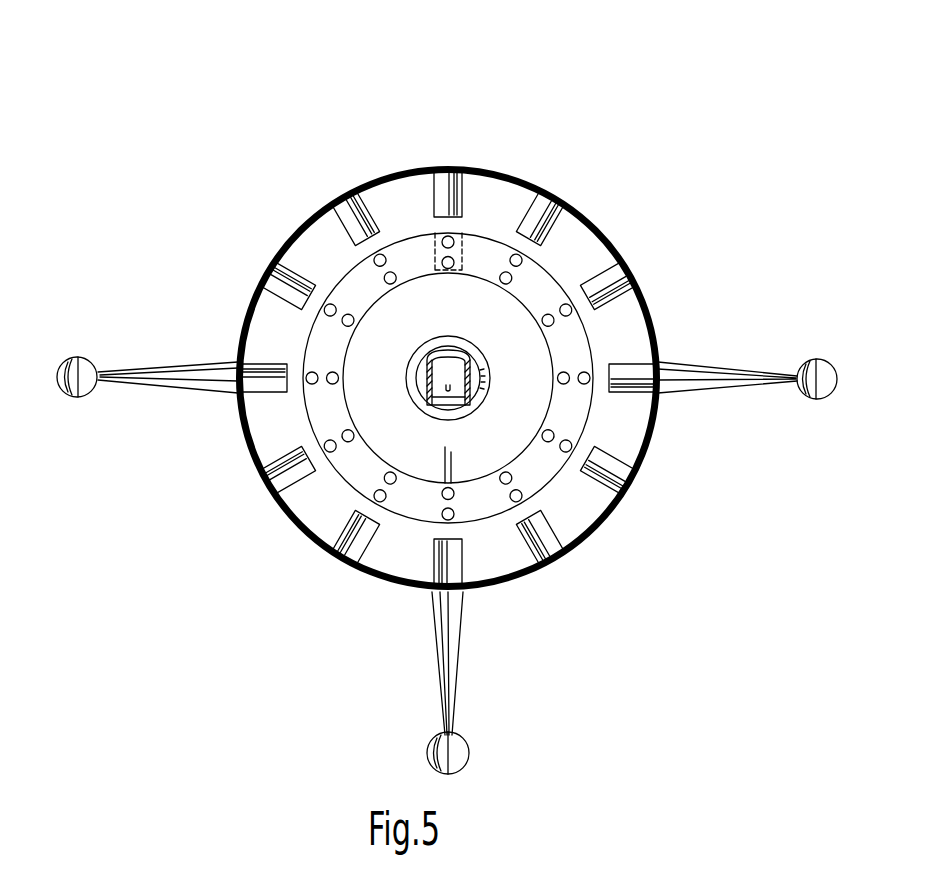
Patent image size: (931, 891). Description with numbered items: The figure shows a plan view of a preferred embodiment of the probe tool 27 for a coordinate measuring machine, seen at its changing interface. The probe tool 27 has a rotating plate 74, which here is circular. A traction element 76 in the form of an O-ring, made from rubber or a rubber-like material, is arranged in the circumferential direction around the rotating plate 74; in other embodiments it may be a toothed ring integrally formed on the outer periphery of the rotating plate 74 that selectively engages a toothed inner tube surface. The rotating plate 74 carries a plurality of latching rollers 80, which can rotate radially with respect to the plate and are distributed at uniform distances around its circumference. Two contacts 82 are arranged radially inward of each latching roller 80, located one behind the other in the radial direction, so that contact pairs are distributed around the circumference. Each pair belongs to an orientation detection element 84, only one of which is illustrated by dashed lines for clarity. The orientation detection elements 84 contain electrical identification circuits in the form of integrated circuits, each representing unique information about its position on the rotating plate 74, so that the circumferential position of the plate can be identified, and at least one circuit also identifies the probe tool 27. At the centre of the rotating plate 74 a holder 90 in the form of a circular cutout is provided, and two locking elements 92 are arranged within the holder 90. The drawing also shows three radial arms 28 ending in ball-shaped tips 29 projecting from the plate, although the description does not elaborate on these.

The probe tool 27 is at (243, 667).
The spoke 28 is at (190, 388).
The ball weight 29 is at (73, 397).
The rotating plate 74 is at (487, 190).
The traction element 76 is at (397, 170).
The latching roller 80 is at (437, 187).
The contact 82 is at (352, 316).
The orientation detection element 84 is at (462, 252).
The holder 90 is at (455, 410).
The locking element 92 is at (463, 357).